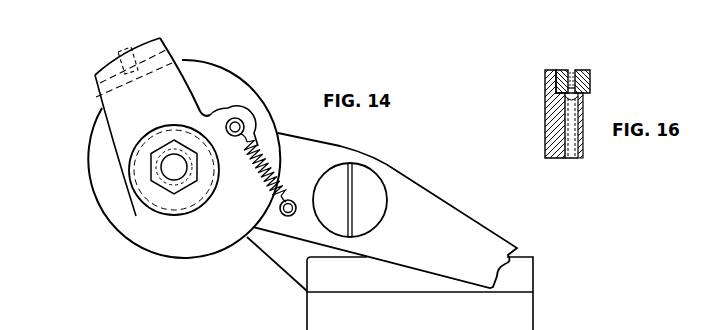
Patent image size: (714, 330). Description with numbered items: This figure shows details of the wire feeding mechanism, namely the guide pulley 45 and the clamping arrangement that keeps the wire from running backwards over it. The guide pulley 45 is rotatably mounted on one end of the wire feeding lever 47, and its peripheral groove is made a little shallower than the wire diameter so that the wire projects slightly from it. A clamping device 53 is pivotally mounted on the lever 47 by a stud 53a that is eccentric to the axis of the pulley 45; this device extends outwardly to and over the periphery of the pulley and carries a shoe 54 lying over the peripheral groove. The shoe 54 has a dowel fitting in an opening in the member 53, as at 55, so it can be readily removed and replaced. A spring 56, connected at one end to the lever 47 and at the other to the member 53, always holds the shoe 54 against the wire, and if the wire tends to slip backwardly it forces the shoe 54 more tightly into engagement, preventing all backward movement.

In FIG. 14, the guide pulley 45 is at (240, 88).
In FIG. 16, the guide pulley 45 is at (582, 145).
In FIG. 14, the wire feeding lever 47 is at (402, 185).
In FIG. 14, the clamping device 53 is at (170, 75).
In FIG. 14, the stud 53a is at (163, 170).
In FIG. 14, the shoe 54 is at (102, 87).
In FIG. 16, the shoe 54 is at (592, 86).
In FIG. 14, the dowel opening 55 is at (120, 52).
In FIG. 16, the dowel opening 55 is at (575, 72).
In FIG. 14, the spring 56 is at (256, 147).